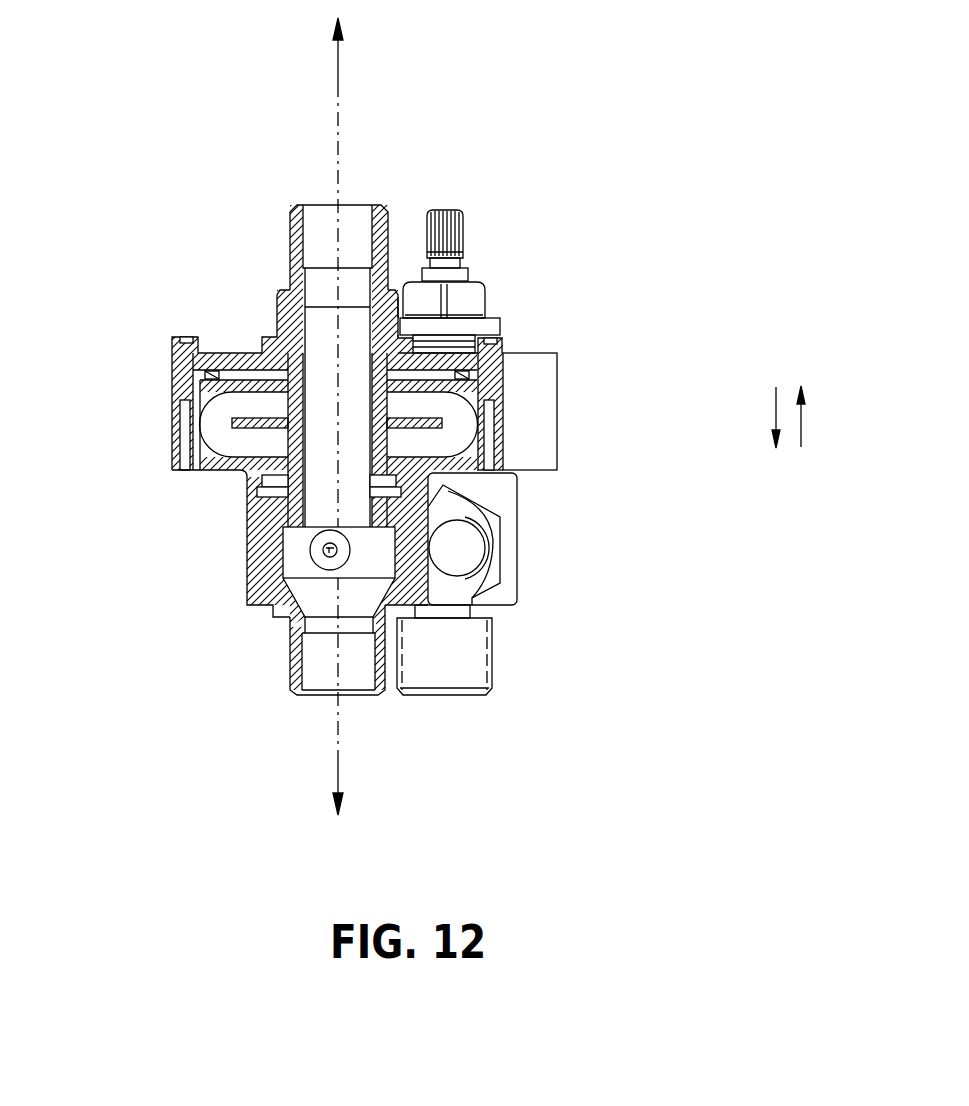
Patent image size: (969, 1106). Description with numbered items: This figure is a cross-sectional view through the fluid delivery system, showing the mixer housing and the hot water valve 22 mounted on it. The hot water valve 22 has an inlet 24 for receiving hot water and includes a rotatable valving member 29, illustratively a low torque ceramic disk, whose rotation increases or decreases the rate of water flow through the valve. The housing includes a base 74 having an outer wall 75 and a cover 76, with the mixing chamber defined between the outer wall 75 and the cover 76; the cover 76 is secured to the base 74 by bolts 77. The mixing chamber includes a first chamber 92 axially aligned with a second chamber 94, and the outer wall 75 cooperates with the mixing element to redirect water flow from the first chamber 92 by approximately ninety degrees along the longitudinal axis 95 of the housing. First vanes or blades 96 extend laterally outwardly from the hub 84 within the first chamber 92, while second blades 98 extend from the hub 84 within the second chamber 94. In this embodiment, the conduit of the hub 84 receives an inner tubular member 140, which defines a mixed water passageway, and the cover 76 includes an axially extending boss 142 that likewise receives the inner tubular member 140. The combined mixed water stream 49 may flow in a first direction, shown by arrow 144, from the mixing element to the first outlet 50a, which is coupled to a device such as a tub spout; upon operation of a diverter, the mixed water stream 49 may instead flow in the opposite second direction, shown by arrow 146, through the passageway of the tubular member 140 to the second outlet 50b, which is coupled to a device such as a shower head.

The hot water valve 22 is at (485, 293).
The inlet 24 is at (493, 647).
The rotatable valving member 29 is at (463, 215).
The combined mixed water stream 49 is at (338, 58).
The first outlet 50a is at (293, 678).
The second outlet 50b is at (290, 225).
The base 74 is at (172, 462).
The outer wall 75 is at (228, 464).
The cover 76 is at (277, 313).
The bolts 77 is at (172, 337).
The hub 84 is at (393, 437).
The first chamber 92 is at (205, 421).
The second chamber 94 is at (410, 487).
The longitudinal axis 95 is at (338, 125).
The first vanes or blades 96 is at (460, 425).
The second blades 98 is at (242, 492).
The inner tubular member 140 is at (245, 567).
The axially extending boss 142 is at (398, 300).
The arrow indicating first direction 144 is at (776, 412).
The arrow indicating second direction 146 is at (801, 425).